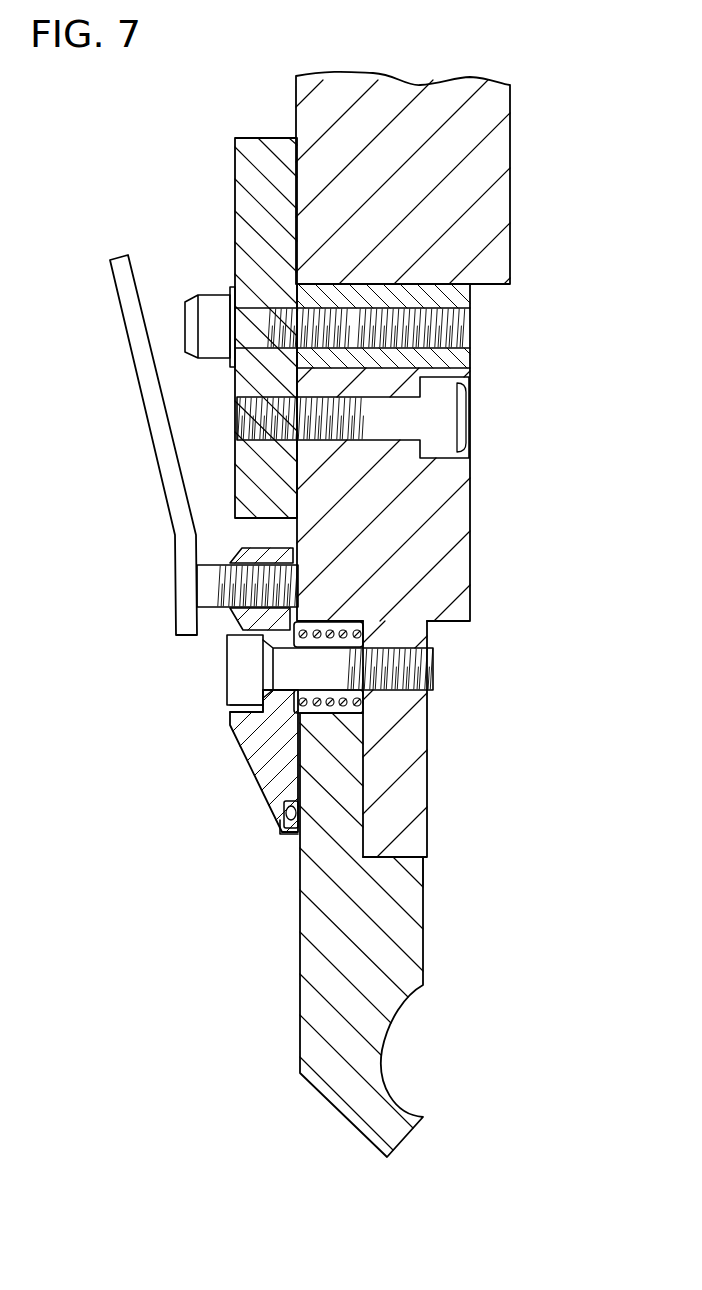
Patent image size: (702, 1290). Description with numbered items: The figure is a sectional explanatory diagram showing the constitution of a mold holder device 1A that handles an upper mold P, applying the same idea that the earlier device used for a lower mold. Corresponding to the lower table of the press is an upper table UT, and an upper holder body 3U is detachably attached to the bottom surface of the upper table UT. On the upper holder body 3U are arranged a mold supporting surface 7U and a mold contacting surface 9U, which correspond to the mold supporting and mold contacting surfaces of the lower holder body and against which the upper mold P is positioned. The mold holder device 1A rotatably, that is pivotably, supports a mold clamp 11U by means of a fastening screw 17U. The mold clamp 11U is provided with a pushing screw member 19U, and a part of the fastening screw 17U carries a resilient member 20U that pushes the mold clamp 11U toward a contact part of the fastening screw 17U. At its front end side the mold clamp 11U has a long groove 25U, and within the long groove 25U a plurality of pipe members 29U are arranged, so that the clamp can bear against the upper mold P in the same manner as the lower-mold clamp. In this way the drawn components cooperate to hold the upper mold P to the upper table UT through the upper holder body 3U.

The upper table UT is at (495, 205).
The mold holder device 1A is at (518, 535).
The upper holder body 3U is at (460, 584).
The pushing screw member 19U is at (205, 588).
The fastening screw 17U is at (242, 672).
The resilient member 20U is at (357, 630).
The mold clamp 11U is at (248, 728).
The long groove 25U is at (285, 798).
The pipe members 29U is at (277, 825).
The mold contacting surface 9U is at (352, 775).
The mold supporting surface 7U is at (405, 860).
The upper mold P is at (410, 955).